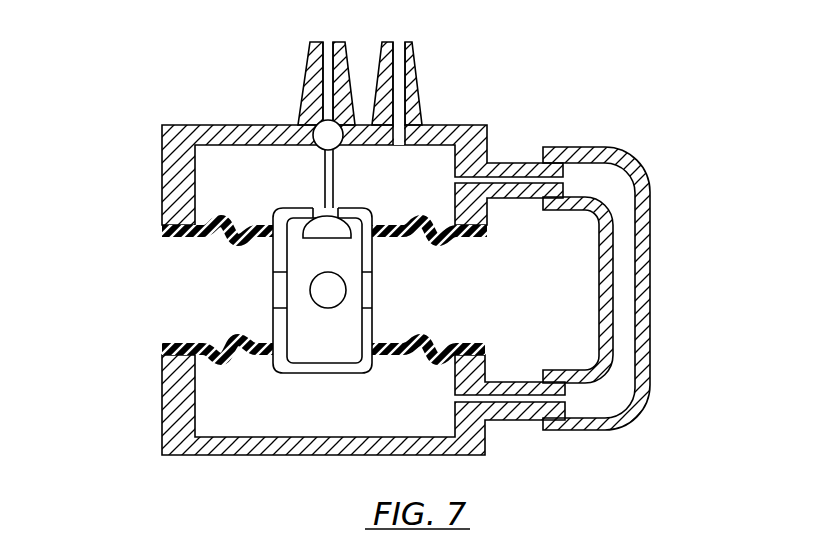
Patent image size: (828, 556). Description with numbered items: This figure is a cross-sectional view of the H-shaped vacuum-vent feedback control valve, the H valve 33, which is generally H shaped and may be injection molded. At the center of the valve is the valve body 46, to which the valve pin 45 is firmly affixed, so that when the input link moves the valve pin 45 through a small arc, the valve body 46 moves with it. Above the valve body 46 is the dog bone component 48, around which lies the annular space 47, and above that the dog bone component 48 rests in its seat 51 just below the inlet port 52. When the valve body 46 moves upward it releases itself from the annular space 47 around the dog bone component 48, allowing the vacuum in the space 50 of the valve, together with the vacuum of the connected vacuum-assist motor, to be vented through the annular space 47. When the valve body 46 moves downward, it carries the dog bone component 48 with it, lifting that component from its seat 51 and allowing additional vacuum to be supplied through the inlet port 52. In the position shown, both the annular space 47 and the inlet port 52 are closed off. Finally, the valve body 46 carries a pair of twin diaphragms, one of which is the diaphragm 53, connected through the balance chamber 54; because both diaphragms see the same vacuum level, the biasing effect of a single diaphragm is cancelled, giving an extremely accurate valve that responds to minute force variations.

The H valve 33 is at (383, 230).
The valve pin 45 is at (333, 289).
The valve body 46 is at (374, 333).
The annular space 47 is at (335, 210).
The dog bone component 48 is at (325, 184).
The space 50 is at (430, 172).
The seat 51 is at (323, 135).
The inlet port 52 is at (330, 34).
The diaphragm 53 is at (457, 236).
The balance chamber 54 is at (627, 284).